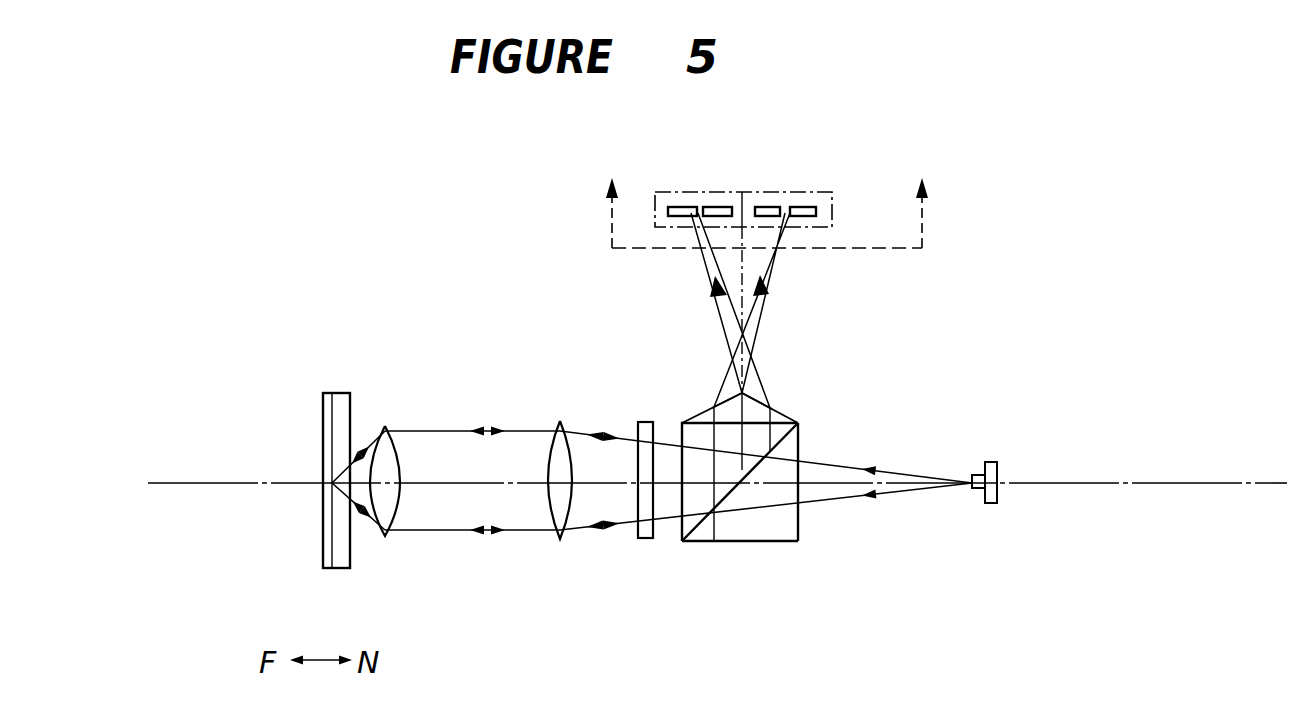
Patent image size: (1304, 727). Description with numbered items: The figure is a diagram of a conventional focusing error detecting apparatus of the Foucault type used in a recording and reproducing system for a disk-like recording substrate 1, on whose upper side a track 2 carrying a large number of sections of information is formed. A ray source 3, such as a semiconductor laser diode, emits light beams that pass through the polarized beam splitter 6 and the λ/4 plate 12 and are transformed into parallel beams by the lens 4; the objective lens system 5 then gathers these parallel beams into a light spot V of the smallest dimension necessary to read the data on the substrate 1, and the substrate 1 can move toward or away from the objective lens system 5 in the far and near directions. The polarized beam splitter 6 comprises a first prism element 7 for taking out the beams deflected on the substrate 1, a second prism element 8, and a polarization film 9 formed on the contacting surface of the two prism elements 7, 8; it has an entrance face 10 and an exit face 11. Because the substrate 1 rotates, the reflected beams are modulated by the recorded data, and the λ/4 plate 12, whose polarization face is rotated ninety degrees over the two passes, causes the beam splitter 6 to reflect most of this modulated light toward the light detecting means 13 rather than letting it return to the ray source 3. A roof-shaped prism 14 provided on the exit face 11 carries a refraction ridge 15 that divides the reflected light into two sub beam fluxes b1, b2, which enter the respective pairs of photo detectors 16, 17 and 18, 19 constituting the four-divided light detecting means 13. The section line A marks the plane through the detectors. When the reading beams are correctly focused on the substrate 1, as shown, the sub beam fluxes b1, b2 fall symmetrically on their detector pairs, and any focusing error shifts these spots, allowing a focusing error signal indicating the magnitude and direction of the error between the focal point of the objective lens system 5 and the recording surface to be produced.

The disk-like recording substrate 1 is at (349, 556).
The track 2 is at (336, 557).
The ray source 3 is at (990, 505).
The lens 4 is at (560, 540).
The objective lens system 5 is at (388, 538).
The polarized beam splitter 6 is at (683, 541).
The first prism element 7 is at (688, 432).
The second prism element 8 is at (757, 522).
The polarization film 9 is at (713, 541).
The entrance face 10 is at (799, 533).
The exit face 11 is at (792, 436).
The λ/4 plate 12 is at (643, 540).
The light detecting means 13 is at (890, 202).
The roof-shaped prism 14 is at (779, 411).
The refraction ridge 15 is at (746, 390).
The photo detector 16 is at (677, 207).
The photo detector 17 is at (722, 207).
The photo detector 18 is at (767, 207).
The photo detector 19 is at (814, 207).
The sub beam flux b1 is at (726, 300).
The sub beam flux b2 is at (768, 296).
The light spot V is at (328, 484).
The section line A-A' A is at (770, 195).